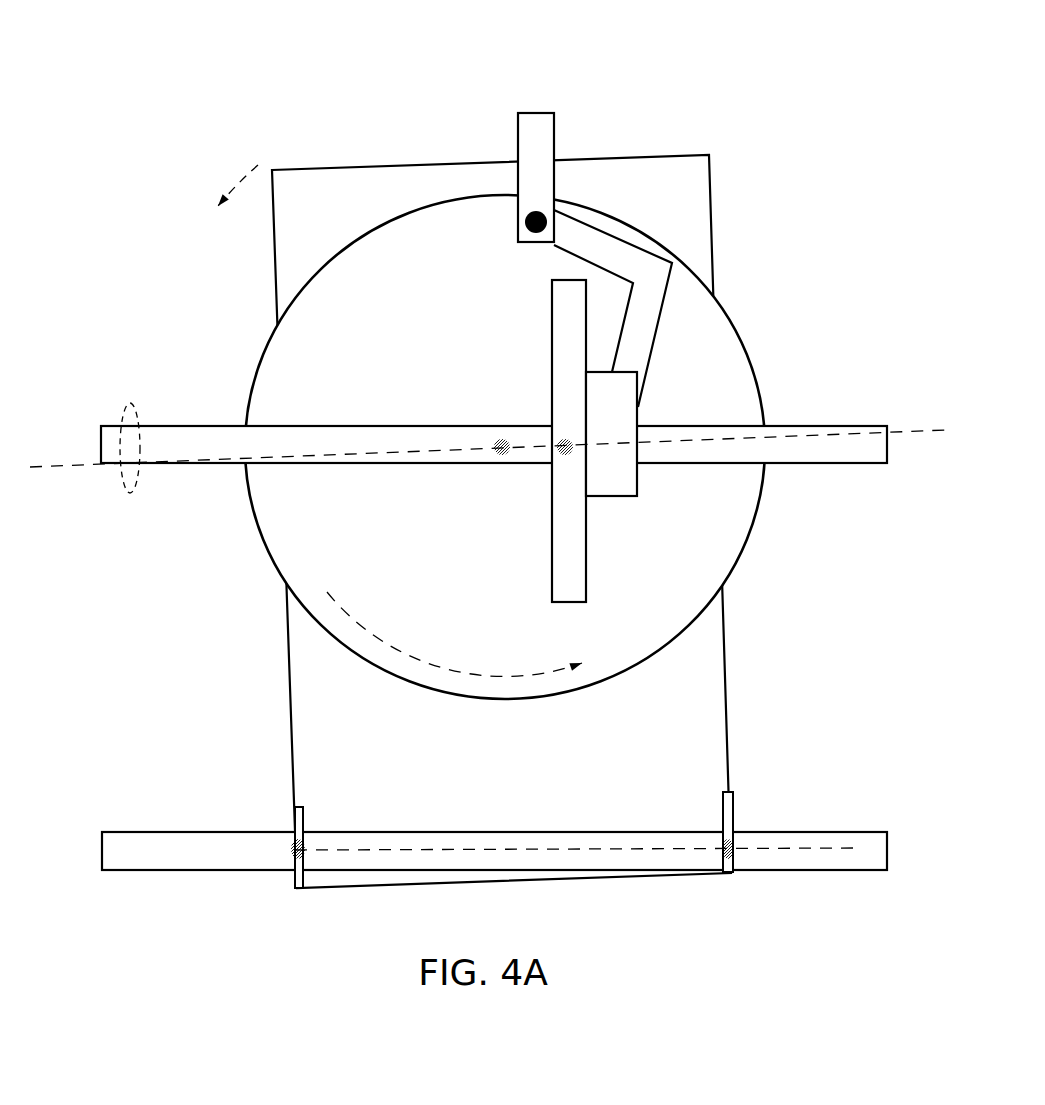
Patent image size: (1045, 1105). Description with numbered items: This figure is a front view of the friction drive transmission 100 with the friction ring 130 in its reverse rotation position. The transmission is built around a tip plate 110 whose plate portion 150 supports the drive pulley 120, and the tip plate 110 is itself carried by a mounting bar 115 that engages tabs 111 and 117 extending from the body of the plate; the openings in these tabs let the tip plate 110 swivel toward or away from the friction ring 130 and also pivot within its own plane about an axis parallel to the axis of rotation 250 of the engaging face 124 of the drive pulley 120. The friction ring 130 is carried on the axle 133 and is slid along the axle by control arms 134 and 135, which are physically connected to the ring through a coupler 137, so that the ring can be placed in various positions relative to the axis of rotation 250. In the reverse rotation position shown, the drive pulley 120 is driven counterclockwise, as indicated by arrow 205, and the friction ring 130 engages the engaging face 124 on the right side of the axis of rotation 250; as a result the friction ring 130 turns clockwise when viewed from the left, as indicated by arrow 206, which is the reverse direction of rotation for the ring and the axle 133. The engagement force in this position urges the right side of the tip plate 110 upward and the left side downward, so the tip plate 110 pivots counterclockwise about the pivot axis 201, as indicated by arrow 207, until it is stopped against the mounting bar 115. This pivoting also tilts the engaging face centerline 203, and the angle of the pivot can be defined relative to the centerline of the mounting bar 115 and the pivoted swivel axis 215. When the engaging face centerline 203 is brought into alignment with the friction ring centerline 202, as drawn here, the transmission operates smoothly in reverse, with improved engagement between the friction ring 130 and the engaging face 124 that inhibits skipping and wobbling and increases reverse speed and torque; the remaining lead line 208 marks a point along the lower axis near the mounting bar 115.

The friction drive transmission 100 is at (188, 44).
The tip plate 110 is at (501, 487).
The tab 111 is at (240, 871).
The mounting bar 115 is at (485, 831).
The tab 117 is at (777, 854).
The drive pulley 120 is at (505, 359).
The engaging face 124 is at (284, 317).
The friction ring 130 is at (618, 441).
The axle 133 is at (494, 413).
The control arm 134 is at (661, 290).
The control arm 135 is at (496, 174).
The coupler 137 is at (696, 406).
The plate portion 150 is at (258, 706).
The pivot axis 201 is at (251, 824).
The friction ring centerline 202 is at (520, 393).
The engaging face centerline 203 is at (487, 468).
The arrow 205 is at (454, 634).
The arrow 206 is at (87, 432).
The arrow 207 is at (204, 176).
The lower axis point 208 is at (616, 883).
The pivoted swivel axis 215 is at (575, 809).
The axis of rotation 250 is at (450, 479).